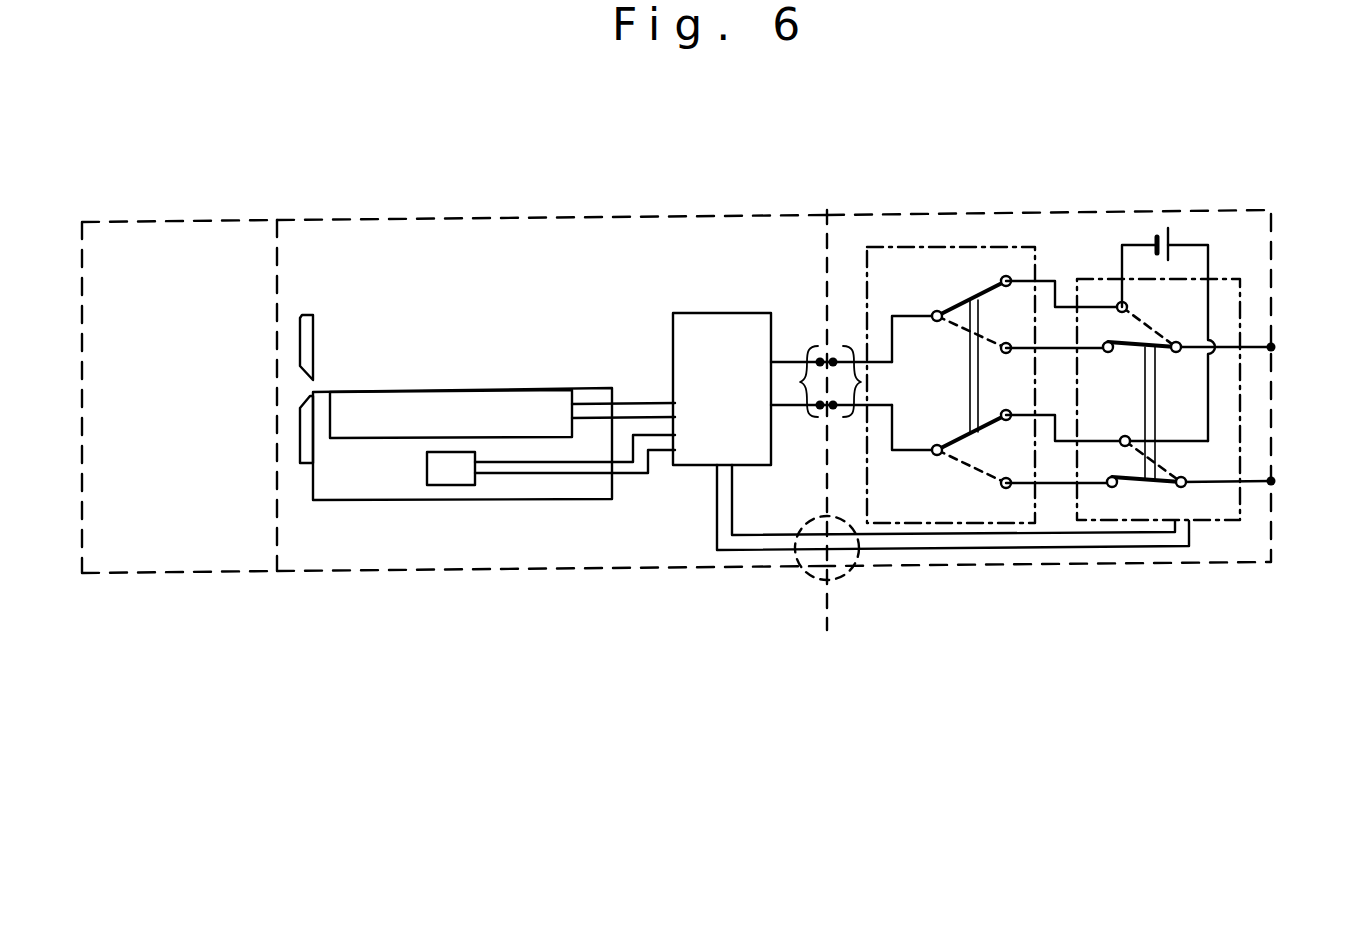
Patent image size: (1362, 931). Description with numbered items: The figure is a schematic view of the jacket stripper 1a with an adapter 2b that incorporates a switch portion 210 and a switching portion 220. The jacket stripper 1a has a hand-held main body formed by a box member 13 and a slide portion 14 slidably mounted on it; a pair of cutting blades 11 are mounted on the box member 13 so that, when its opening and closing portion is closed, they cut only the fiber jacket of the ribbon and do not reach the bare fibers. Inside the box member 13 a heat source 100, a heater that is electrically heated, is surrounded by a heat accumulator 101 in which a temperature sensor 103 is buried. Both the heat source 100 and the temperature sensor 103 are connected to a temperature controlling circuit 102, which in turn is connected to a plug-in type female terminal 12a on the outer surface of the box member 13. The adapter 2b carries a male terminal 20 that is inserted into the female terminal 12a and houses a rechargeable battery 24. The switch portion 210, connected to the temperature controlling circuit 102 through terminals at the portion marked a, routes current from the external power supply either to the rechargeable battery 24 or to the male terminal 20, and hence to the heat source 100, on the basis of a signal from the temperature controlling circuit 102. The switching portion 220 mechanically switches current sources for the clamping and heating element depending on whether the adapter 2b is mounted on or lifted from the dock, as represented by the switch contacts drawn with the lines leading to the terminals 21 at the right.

The cutting blades 11 is at (300, 427).
The box member 13 is at (340, 218).
The slide portion 14 is at (132, 568).
The jacket stripper 1a is at (546, 581).
The adapter 2b is at (1229, 569).
The heat source 100 is at (430, 410).
The heat accumulator 101 is at (347, 490).
The temperature controlling circuit 102 is at (720, 325).
The temperature sensor 103 is at (457, 478).
The female terminal 12a is at (798, 383).
The male terminal 20 is at (859, 383).
The switching portion 220 is at (952, 247).
The switch portion 210 is at (1244, 296).
The rechargeable battery 24 is at (1153, 233).
The output terminals 21 is at (1288, 343).